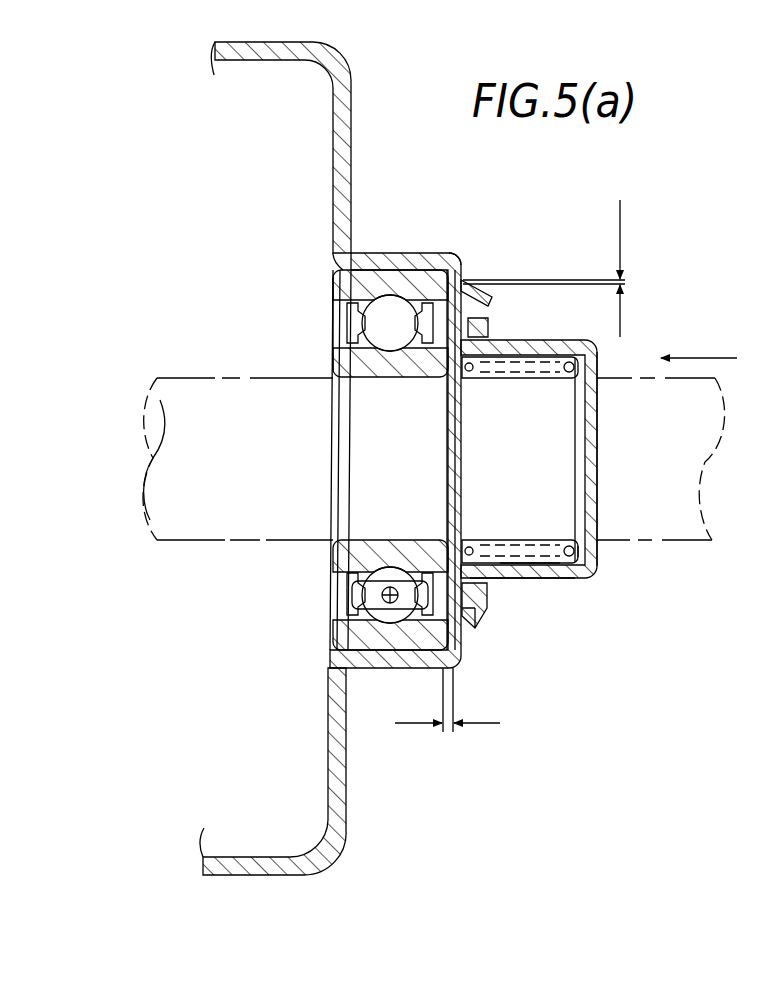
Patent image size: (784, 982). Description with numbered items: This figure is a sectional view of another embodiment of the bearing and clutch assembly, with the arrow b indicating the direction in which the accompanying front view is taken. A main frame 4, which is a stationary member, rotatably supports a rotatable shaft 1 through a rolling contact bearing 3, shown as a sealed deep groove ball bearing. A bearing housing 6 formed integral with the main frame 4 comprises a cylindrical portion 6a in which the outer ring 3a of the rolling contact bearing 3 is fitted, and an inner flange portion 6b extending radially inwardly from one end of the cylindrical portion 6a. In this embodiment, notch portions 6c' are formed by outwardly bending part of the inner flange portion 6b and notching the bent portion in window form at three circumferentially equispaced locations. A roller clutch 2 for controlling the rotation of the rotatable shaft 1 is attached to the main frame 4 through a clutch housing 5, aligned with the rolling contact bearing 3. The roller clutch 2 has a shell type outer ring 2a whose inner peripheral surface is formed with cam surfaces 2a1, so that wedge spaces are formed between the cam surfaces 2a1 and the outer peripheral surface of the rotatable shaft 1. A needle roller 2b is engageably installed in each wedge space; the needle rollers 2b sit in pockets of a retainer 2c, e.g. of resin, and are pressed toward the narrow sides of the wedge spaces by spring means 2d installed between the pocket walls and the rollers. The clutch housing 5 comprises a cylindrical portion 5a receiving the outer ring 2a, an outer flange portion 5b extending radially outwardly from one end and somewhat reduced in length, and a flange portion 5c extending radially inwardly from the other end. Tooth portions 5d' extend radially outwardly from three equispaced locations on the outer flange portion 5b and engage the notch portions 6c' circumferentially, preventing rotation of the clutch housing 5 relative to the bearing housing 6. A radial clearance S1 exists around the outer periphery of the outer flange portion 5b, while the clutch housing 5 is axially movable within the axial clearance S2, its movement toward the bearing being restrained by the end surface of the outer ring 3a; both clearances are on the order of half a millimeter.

The rotatable shaft 1 is at (190, 376).
The roller clutch 2 is at (552, 390).
The outer ring 2a is at (520, 548).
The cam surfaces 2a1 is at (510, 572).
The needle roller 2b is at (492, 540).
The retainer 2c is at (572, 541).
The spring means 2d is at (507, 380).
The rolling contact bearing 3 is at (312, 302).
The outer ring 3a is at (334, 276).
The main frame 4 is at (348, 75).
The clutch housing 5 is at (598, 590).
The cylindrical portion 5a is at (554, 582).
The outer flange portion 5b is at (471, 613).
The flange portion 5c is at (601, 563).
The tooth portions 5d' is at (507, 321).
The bearing housing 6 is at (425, 251).
The cylindrical portion 6a is at (381, 262).
The inner flange portion 6b is at (453, 259).
The notch portions 6c' is at (494, 267).
The radial clearance S1 is at (560, 268).
The axial clearance S2 is at (446, 700).
The arrow b is at (709, 361).